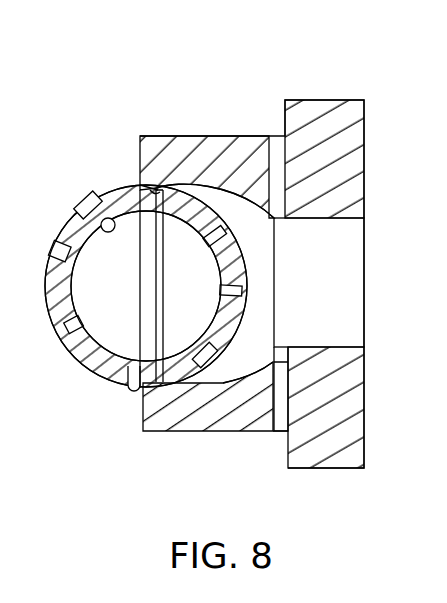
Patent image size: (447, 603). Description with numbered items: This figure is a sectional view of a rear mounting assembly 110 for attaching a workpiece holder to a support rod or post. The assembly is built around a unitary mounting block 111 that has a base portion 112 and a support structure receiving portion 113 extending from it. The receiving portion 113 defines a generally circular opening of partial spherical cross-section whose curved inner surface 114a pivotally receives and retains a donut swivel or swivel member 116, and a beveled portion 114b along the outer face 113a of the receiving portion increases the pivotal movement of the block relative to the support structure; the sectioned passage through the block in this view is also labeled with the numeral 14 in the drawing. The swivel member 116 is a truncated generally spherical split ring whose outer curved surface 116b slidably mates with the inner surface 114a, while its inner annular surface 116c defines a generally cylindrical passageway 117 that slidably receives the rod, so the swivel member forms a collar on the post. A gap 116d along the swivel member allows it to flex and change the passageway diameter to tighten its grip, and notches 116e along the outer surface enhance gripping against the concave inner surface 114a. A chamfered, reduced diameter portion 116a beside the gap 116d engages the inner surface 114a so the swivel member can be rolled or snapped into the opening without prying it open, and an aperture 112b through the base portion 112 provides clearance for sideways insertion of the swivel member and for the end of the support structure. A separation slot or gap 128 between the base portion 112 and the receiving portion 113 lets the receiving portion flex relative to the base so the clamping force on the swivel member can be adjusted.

The rear mounting assembly 110 is at (78, 105).
The mounting block 111 is at (258, 108).
The base portion 112 is at (313, 100).
The aperture 112b is at (340, 286).
The support structure receiving portion 113 is at (152, 176).
The outer face 113a is at (150, 188).
The curved inner surface 114a is at (234, 364).
The beveled portion 114b is at (150, 190).
The swivel member 116 is at (76, 370).
The chamfered portion 116a is at (205, 184).
The outer curved surface 116b is at (103, 390).
The inner annular surface 116c is at (78, 196).
The gap 116d is at (156, 196).
The notches 116e is at (125, 368).
The cylindrical passageway 117 is at (96, 315).
The flow passage 14 is at (132, 292).
The separation gap 128 is at (279, 418).